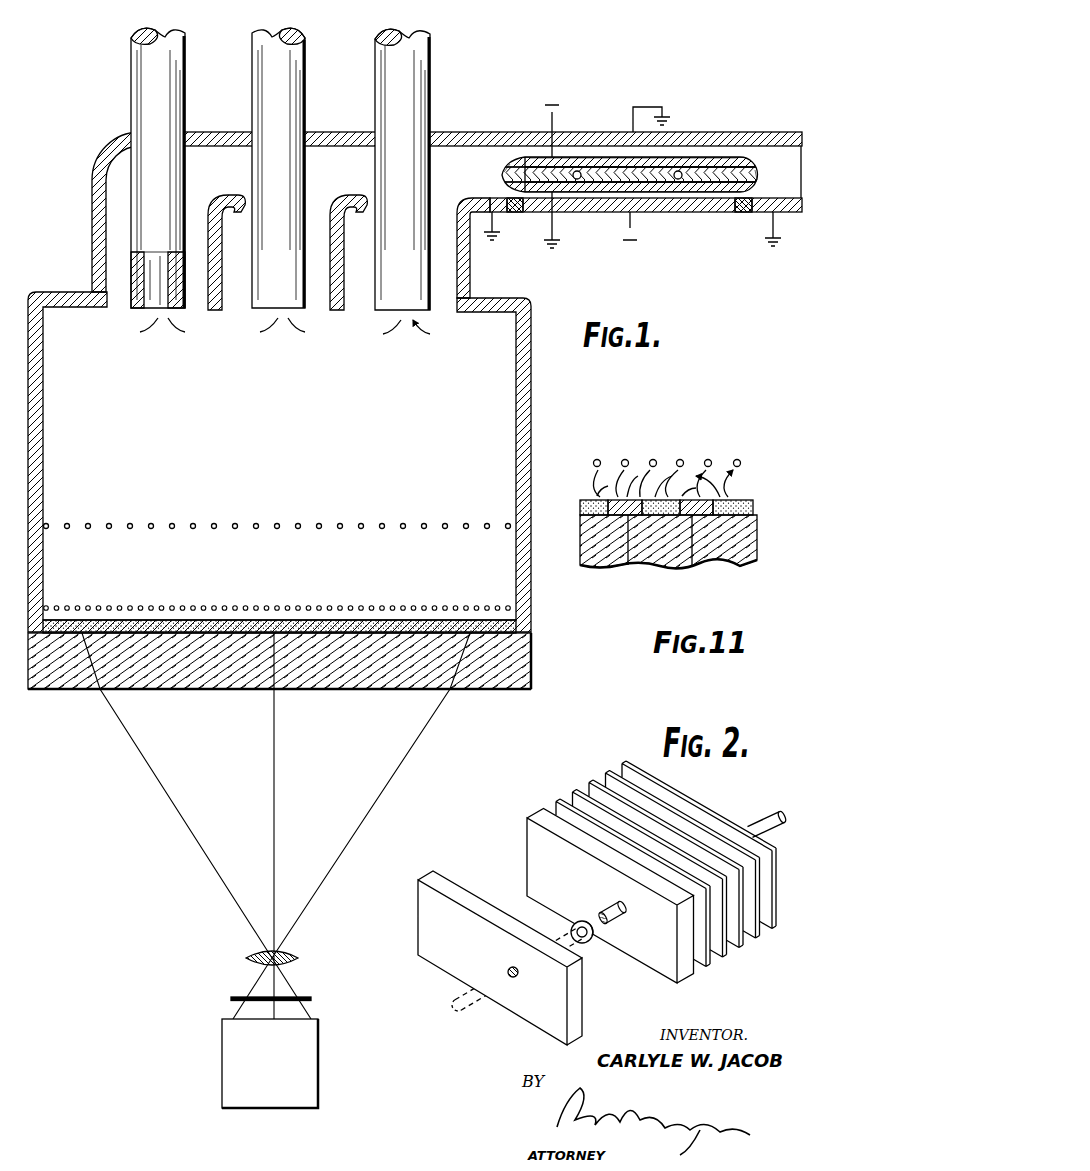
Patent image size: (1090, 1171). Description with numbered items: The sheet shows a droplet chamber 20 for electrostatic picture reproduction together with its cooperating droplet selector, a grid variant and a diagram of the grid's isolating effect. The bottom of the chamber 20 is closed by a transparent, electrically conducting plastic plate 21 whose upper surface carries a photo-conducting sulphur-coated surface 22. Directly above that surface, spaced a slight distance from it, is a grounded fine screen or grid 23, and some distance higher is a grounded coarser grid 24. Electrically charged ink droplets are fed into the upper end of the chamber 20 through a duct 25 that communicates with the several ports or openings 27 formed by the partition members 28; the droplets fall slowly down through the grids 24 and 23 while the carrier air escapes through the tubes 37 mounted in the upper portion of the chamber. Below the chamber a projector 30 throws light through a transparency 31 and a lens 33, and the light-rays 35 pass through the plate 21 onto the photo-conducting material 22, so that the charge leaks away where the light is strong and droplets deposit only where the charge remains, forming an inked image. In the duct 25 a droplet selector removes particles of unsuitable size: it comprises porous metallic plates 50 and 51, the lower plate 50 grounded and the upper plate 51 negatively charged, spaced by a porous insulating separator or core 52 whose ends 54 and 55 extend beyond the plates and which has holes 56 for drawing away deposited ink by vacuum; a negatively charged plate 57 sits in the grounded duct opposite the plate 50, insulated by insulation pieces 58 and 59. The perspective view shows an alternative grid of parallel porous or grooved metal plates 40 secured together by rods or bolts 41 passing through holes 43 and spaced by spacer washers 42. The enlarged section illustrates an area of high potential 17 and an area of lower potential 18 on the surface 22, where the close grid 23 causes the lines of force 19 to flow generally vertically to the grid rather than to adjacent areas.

In FIG. 11, the area of high potential 17 is at (628, 566).
In FIG. 11, the area of lower or medium potential 18 is at (692, 566).
In FIG. 11, the lines of force 19 is at (668, 482).
In FIG. 1, the chamber 20 is at (522, 440).
In FIG. 1, the transparent plastic plate 21 is at (515, 667).
In FIG. 11, the transparent plastic plate 21 is at (742, 560).
In FIG. 1, the sulphur-coated surface 22 is at (516, 627).
In FIG. 11, the sulphur-coated surface 22 is at (742, 500).
In FIG. 1, the fine screen or grid 23 is at (509, 608).
In FIG. 11, the fine screen or grid 23 is at (740, 460).
In FIG. 1, the coarser grid 24 is at (510, 526).
In FIG. 1, the duct 25 is at (770, 146).
In FIG. 1, the ports or openings 27 is at (117, 246).
In FIG. 1, the partition members 28 is at (215, 305).
In FIG. 1, the projector 30 is at (299, 1063).
In FIG. 1, the transparency 31 is at (311, 999).
In FIG. 1, the lens 33 is at (300, 956).
In FIG. 1, the light-rays 35 is at (210, 862).
In FIG. 1, the tubes 37 is at (272, 86).
In FIG. 2, the plates 40 is at (682, 973).
In FIG. 2, the rods or bolts 41 is at (756, 828).
In FIG. 2, the spacer washers 42 is at (588, 942).
In FIG. 2, the holes 43 is at (512, 965).
In FIG. 1, the lower plate 50 is at (695, 186).
In FIG. 1, the upper plate 51 is at (710, 163).
In FIG. 1, the separator or core 52 is at (653, 175).
In FIG. 1, the end of core 54 is at (502, 175).
In FIG. 1, the end of core 55 is at (752, 176).
In FIG. 1, the holes 56 is at (577, 179).
In FIG. 1, the plate 57 is at (715, 212).
In FIG. 1, the insulation piece 58 is at (515, 212).
In FIG. 1, the insulation piece 59 is at (747, 212).